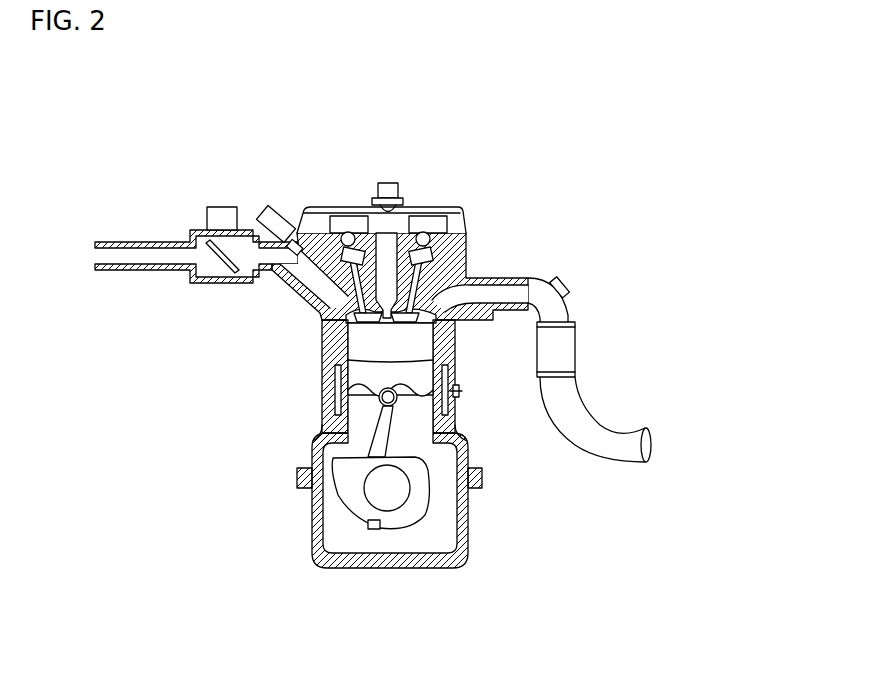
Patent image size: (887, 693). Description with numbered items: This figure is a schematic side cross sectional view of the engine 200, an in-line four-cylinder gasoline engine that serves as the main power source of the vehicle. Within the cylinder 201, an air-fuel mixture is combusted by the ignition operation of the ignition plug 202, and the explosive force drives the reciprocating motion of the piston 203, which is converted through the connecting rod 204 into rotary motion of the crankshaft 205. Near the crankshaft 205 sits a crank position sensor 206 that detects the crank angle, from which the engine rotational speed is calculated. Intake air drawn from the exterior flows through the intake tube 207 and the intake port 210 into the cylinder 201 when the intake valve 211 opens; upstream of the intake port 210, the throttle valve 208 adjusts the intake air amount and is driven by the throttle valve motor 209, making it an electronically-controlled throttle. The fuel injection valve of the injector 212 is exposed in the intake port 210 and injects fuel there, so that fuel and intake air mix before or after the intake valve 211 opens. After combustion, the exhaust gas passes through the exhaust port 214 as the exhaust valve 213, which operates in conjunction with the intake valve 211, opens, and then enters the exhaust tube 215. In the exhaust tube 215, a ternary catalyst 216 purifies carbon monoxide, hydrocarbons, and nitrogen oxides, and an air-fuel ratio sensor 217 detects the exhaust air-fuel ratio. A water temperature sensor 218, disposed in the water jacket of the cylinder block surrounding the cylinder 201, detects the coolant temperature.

The engine 200 is at (676, 180).
The cylinder 201 is at (327, 423).
The ignition plug 202 is at (390, 183).
The piston 203 is at (343, 380).
The connecting rod 204 is at (327, 462).
The crankshaft 205 is at (394, 492).
The crank position sensor 206 is at (367, 520).
The intake tube 207 is at (162, 257).
The throttle valve 208 is at (220, 274).
The throttle valve motor 209 is at (210, 208).
The intake port 210 is at (403, 236).
The intake valve 211 is at (322, 297).
The injector 212 is at (262, 212).
The exhaust valve 213 is at (443, 308).
The exhaust port 214 is at (478, 292).
The exhaust tube 215 is at (622, 432).
The ternary catalyst 216 is at (575, 355).
The air-fuel ratio sensor 217 is at (566, 285).
The water temperature sensor 218 is at (460, 391).